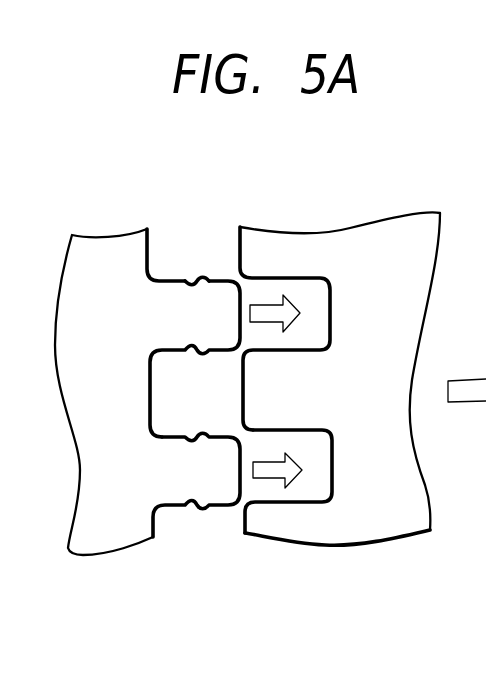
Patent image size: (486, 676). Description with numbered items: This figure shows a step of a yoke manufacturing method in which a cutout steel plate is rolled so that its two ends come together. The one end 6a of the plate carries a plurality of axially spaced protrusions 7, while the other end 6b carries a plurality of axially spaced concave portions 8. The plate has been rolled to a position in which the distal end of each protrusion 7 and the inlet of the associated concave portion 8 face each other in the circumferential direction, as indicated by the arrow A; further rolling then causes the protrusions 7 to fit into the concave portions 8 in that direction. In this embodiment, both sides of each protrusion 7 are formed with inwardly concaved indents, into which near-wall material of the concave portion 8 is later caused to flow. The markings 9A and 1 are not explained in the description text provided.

The one end 6a is at (147, 389).
The other end 6b is at (340, 396).
The engaging projection 9A is at (197, 280).
The protrusion 7 is at (217, 492).
The concave portion 8 is at (322, 480).
The assembled body 1 is at (288, 523).
The arrow A is at (300, 462).